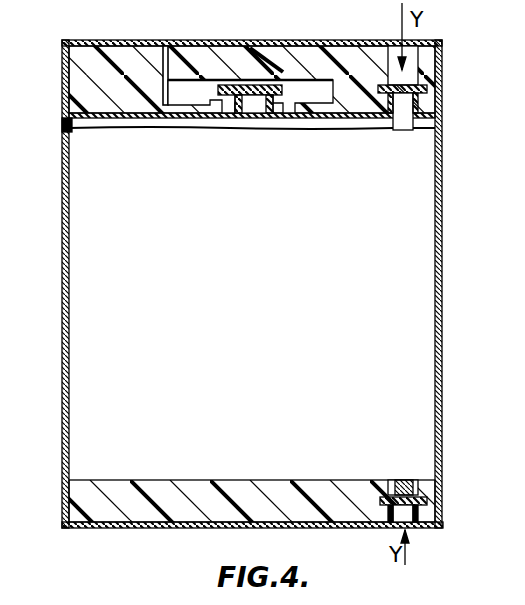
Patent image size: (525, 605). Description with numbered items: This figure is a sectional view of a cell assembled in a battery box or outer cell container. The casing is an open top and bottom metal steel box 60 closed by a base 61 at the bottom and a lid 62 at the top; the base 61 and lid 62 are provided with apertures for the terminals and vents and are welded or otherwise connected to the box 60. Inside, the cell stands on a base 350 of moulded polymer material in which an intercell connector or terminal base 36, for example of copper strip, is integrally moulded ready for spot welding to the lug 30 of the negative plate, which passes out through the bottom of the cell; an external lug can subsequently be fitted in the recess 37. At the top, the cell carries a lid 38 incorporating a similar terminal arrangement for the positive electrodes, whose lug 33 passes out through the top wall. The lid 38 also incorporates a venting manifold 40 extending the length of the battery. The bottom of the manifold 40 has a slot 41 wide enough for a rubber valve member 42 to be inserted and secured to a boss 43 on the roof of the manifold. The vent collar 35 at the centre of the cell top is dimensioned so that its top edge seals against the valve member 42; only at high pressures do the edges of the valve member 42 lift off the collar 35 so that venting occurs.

The lug 30 is at (402, 488).
The lug 33 is at (400, 123).
The vent collar 35 is at (243, 100).
The terminal base 36 is at (387, 507).
The recess 37 is at (413, 513).
The lid 38 is at (108, 56).
The venting manifold 40 is at (194, 80).
The slot 41 is at (223, 108).
The rubber valve member 42 is at (246, 84).
The boss 43 is at (275, 72).
The metal box 60 is at (441, 326).
The base 61 is at (62, 491).
The lid 62 is at (442, 70).
The bottom insulating body 350 is at (130, 498).